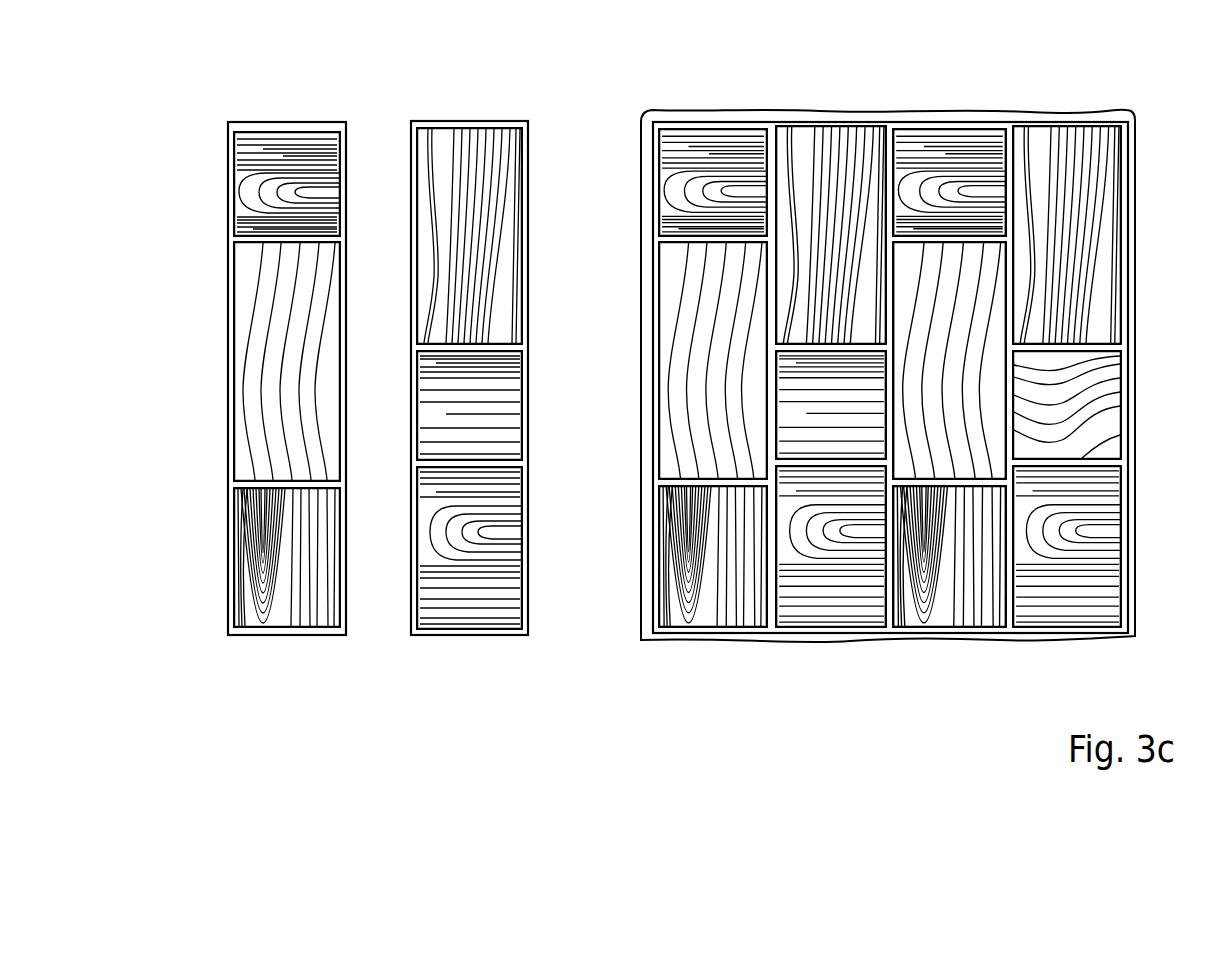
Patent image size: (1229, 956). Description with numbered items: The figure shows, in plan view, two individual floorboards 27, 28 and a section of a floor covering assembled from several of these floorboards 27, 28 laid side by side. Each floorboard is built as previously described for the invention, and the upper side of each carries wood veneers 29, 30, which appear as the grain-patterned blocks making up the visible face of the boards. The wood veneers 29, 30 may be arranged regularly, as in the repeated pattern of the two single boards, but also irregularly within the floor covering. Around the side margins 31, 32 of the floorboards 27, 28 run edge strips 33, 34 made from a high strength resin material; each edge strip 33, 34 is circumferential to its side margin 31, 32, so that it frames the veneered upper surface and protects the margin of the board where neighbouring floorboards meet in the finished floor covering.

The floorboard 27 is at (292, 121).
The floorboard 28 is at (491, 119).
The wood veneer 29 is at (240, 388).
The wood veneer 30 is at (521, 232).
The side margin 31 is at (232, 452).
The side margin 32 is at (531, 558).
The edge strip 33 is at (228, 606).
The edge strip 34 is at (532, 302).